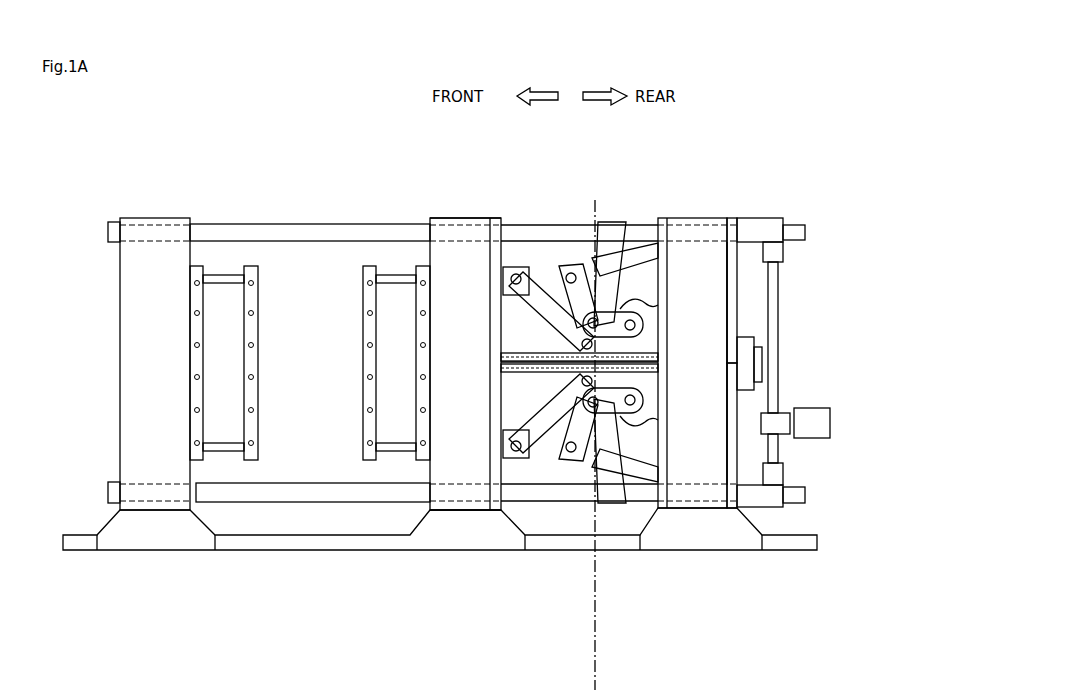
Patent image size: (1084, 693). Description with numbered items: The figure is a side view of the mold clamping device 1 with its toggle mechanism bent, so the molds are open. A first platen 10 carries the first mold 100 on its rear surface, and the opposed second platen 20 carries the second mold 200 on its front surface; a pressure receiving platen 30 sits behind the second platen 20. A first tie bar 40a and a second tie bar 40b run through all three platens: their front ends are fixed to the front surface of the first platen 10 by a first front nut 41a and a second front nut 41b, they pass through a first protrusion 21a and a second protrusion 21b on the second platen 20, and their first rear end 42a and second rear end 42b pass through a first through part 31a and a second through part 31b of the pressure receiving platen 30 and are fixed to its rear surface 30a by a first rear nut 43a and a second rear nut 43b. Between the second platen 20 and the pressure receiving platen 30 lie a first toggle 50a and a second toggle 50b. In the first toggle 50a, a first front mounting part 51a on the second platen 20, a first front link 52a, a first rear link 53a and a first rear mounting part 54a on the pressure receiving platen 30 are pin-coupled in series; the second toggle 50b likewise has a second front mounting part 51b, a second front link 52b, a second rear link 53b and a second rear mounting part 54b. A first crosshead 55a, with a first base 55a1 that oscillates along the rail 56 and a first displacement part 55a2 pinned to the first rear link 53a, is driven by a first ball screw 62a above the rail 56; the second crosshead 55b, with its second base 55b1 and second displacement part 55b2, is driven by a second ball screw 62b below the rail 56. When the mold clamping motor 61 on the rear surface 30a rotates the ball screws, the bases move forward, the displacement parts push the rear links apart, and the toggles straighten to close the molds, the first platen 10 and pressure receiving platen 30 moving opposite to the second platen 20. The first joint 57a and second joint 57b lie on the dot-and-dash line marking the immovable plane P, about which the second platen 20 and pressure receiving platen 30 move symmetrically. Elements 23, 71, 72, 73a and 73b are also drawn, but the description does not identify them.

The mold clamping device 1 is at (206, 128).
The first platen 10 is at (152, 218).
The first mold 100 is at (228, 275).
The second mold 200 is at (395, 275).
The second platen 20 is at (470, 218).
The first protrusion 21a is at (445, 222).
The second protrusion 21b is at (440, 512).
The rear plate of movable platen 23 is at (495, 325).
The pressure receiving platen 30 is at (702, 218).
The rear surface 30a is at (733, 302).
The first through part 31a is at (738, 222).
The second through part 31b is at (735, 510).
The first tie bar 40a is at (303, 224).
The second tie bar 40b is at (300, 503).
The first front nut 41a is at (111, 235).
The second front nut 41b is at (111, 488).
The first rear end 42a is at (805, 233).
The second rear end 42b is at (805, 495).
The first rear nut 43a is at (765, 218).
The second rear nut 43b is at (785, 506).
The first toggle 50a is at (658, 180).
The second toggle 50b is at (653, 604).
The first front mounting part 51a is at (512, 268).
The second front mounting part 51b is at (505, 520).
The first front link 52a is at (565, 265).
The second front link 52b is at (540, 527).
The first rear link 53a is at (600, 222).
The second rear link 53b is at (600, 528).
The first rear mounting part 54a is at (636, 248).
The second rear mounting part 54b is at (625, 528).
The first crosshead 55a is at (650, 304).
The first base 55a1 is at (642, 326).
The first displacement part 55a2 is at (612, 302).
The second crosshead 55b is at (650, 422).
The second base 55b1 is at (642, 401).
The second displacement part 55b2 is at (612, 422).
The rail 56 is at (528, 366).
The first joint 57a is at (600, 232).
The second joint 57b is at (648, 528).
The mold clamping motor 61 is at (762, 363).
The first ball screw 62a is at (658, 357).
The second ball screw 62b is at (658, 368).
The drive shaft 71 is at (778, 330).
The drive motor 72 is at (806, 408).
The upper bearing 73a is at (783, 255).
The lower bearing 73b is at (783, 473).
The immovable plane P is at (588, 680).